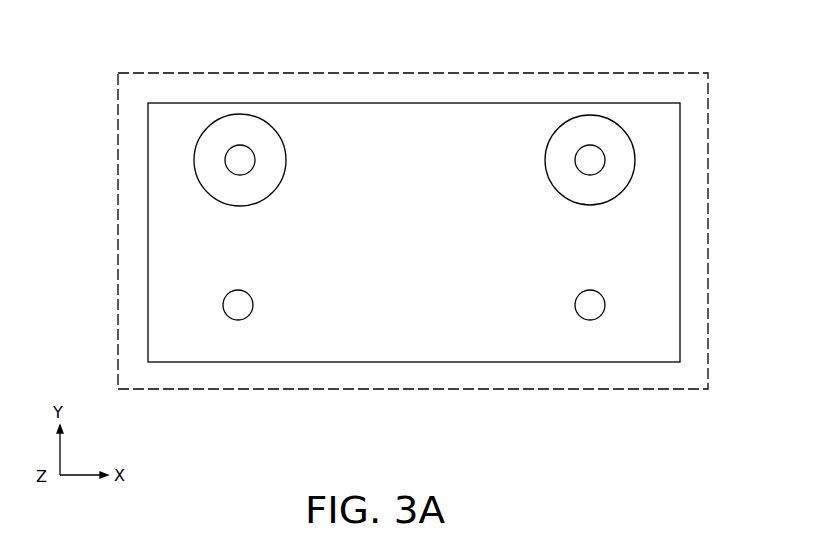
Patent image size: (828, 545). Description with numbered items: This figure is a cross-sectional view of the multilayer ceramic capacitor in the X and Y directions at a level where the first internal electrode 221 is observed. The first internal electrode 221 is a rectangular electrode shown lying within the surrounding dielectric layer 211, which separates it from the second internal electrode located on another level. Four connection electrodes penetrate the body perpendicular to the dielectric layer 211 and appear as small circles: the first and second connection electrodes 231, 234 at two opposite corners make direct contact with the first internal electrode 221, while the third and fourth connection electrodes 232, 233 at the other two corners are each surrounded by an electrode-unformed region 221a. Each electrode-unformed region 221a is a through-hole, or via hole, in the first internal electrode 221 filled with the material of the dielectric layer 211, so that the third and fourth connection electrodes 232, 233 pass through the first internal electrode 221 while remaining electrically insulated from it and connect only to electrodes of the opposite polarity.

The dielectric layer 211 is at (372, 87).
The first internal electrode 221 is at (446, 122).
The electrode-unformed region 221a is at (273, 153).
The first connection electrode 231 is at (238, 320).
The third connection electrode 232 is at (240, 144).
The fourth connection electrode 233 is at (597, 145).
The second connection electrode 234 is at (592, 320).